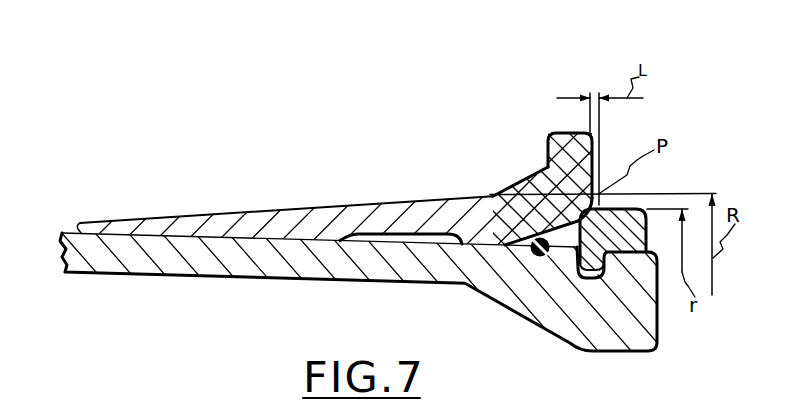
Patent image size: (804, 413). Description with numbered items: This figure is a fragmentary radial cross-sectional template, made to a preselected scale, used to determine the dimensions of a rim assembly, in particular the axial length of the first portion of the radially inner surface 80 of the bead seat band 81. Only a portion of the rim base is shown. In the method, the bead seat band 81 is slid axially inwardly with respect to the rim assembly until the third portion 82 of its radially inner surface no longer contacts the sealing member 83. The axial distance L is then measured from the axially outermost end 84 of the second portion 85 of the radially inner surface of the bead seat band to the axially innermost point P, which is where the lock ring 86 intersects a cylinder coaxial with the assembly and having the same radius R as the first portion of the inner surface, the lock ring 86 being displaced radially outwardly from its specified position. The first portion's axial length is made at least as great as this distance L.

The radially inner surface 80 is at (413, 258).
The bead seat band 81 is at (394, 187).
The third portion of the radially inner surface 82 is at (466, 203).
The sealing member 83 is at (499, 286).
The axially outermost end of the second portion 84 is at (546, 183).
The second portion of the radially inner surface 85 is at (515, 168).
The lock ring 86 is at (610, 293).